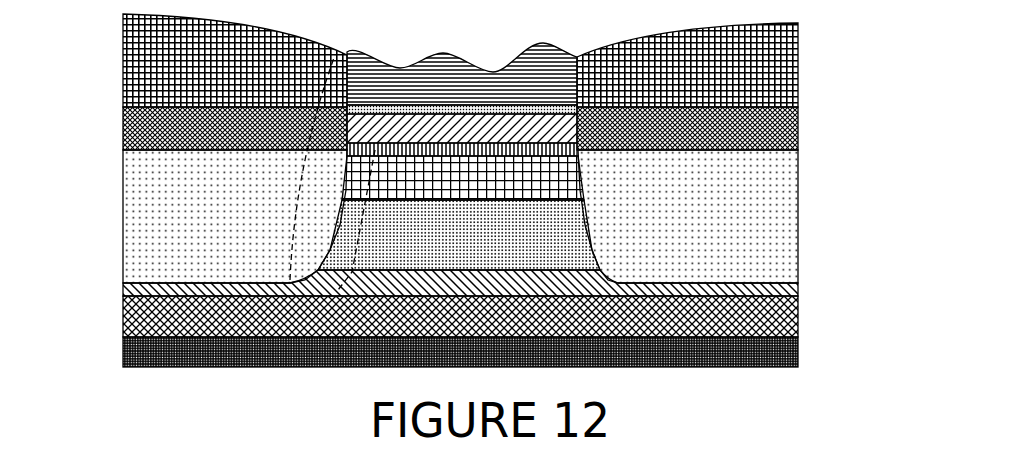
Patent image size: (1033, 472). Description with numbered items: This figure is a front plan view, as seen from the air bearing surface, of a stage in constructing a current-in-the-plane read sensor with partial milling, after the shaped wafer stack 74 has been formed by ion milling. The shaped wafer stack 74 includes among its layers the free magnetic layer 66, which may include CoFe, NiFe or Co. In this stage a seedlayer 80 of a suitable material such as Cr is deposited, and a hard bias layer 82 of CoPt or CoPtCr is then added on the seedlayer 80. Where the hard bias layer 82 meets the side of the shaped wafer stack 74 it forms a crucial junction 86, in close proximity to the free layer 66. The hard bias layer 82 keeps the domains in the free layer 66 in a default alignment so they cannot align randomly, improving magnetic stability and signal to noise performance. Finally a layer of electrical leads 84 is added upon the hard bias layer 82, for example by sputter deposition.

The shaped wafer stack 74 is at (76, 130).
The free magnetic layer 66 is at (537, 127).
The seedlayer 80 is at (798, 255).
The hard bias layer 82 is at (798, 127).
The layer of electrical leads 84 is at (798, 77).
The junction 86 is at (372, 95).